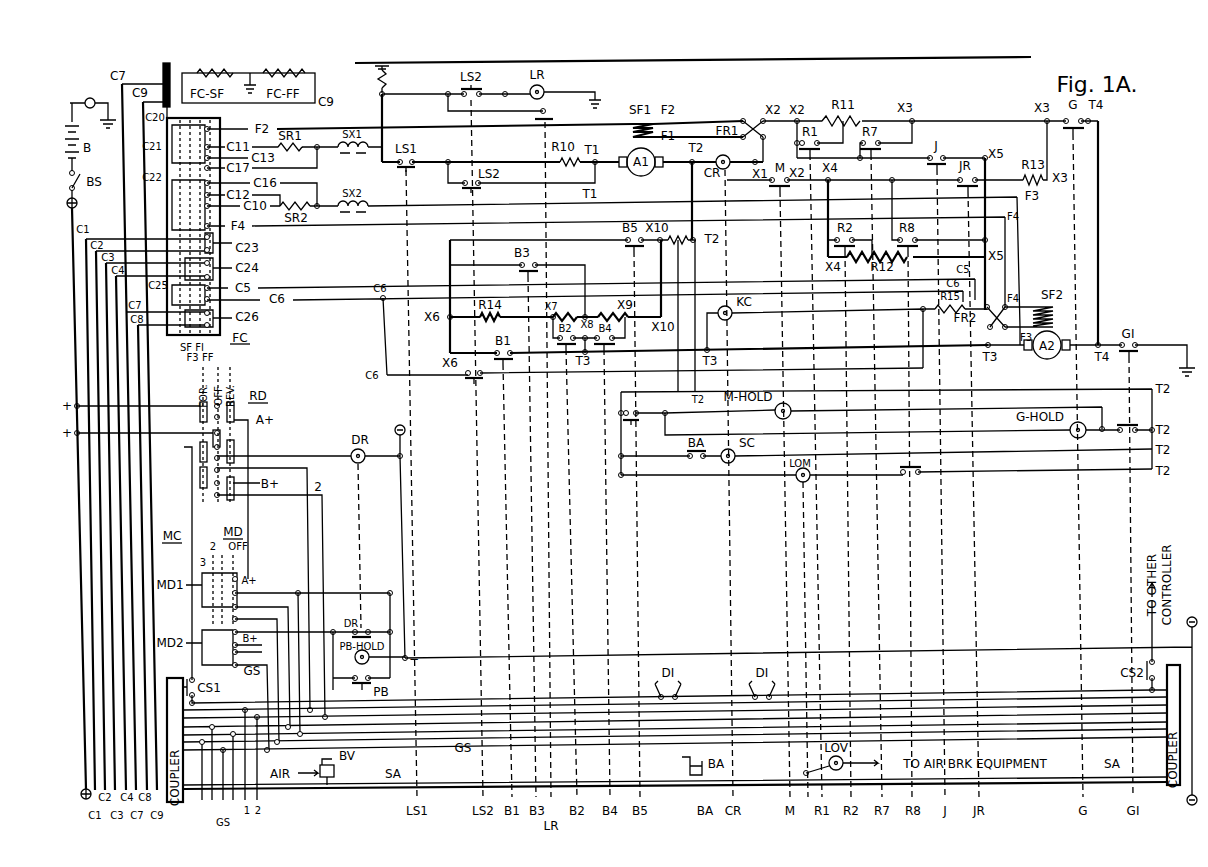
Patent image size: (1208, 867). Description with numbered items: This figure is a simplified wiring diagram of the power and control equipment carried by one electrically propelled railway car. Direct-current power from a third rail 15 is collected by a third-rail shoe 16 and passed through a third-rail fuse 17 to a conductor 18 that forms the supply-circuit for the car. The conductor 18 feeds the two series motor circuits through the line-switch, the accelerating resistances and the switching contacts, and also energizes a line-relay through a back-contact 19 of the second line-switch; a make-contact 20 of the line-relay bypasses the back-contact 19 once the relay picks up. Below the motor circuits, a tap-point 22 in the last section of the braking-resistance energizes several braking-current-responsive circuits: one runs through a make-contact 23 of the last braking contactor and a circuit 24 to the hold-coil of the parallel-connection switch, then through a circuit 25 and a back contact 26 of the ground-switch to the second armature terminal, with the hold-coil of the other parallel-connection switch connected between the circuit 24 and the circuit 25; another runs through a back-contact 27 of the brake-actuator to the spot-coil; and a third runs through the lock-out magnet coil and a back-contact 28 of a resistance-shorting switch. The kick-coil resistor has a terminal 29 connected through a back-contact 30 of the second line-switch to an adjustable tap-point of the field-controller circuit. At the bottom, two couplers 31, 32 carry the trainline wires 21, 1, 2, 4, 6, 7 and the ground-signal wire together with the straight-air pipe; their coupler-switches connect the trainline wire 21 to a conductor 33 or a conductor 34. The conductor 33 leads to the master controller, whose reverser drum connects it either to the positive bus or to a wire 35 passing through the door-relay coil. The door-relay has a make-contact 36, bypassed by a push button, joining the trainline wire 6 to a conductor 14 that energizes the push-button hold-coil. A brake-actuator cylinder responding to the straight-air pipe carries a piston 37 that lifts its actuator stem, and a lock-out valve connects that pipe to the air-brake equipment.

The trainline wire 1 is at (675, 706).
The trainline wire 2 is at (675, 714).
The trainline wire 4 is at (675, 704).
The trainline wire 6 is at (675, 696).
The trainline wire 7 is at (675, 710).
The conductor 14 is at (338, 657).
The third rail 15 is at (693, 60).
The third-rail shoe 16 is at (390, 72).
The third-rail fuse 17 is at (374, 81).
The conductor 18 is at (373, 130).
The back-contact 19 is at (495, 102).
The make-contact 20 is at (552, 112).
The trainline wire 21 is at (679, 698).
The tap-point 22 is at (872, 362).
The make-contact 23 is at (632, 411).
The circuit 24 is at (856, 420).
The circuit 25 is at (955, 423).
The back contact 26 is at (1132, 420).
The back-contact 27 is at (657, 465).
The back-contact 28 is at (1026, 464).
The terminal 29 is at (836, 333).
The back-contact 30 is at (655, 380).
The coupler 31 is at (175, 682).
The coupler 32 is at (1161, 670).
The conductor 33 is at (177, 560).
The conductor 34 is at (1149, 622).
The wire 35 is at (284, 448).
The make-contact 36 is at (365, 627).
The piston 37 is at (683, 763).